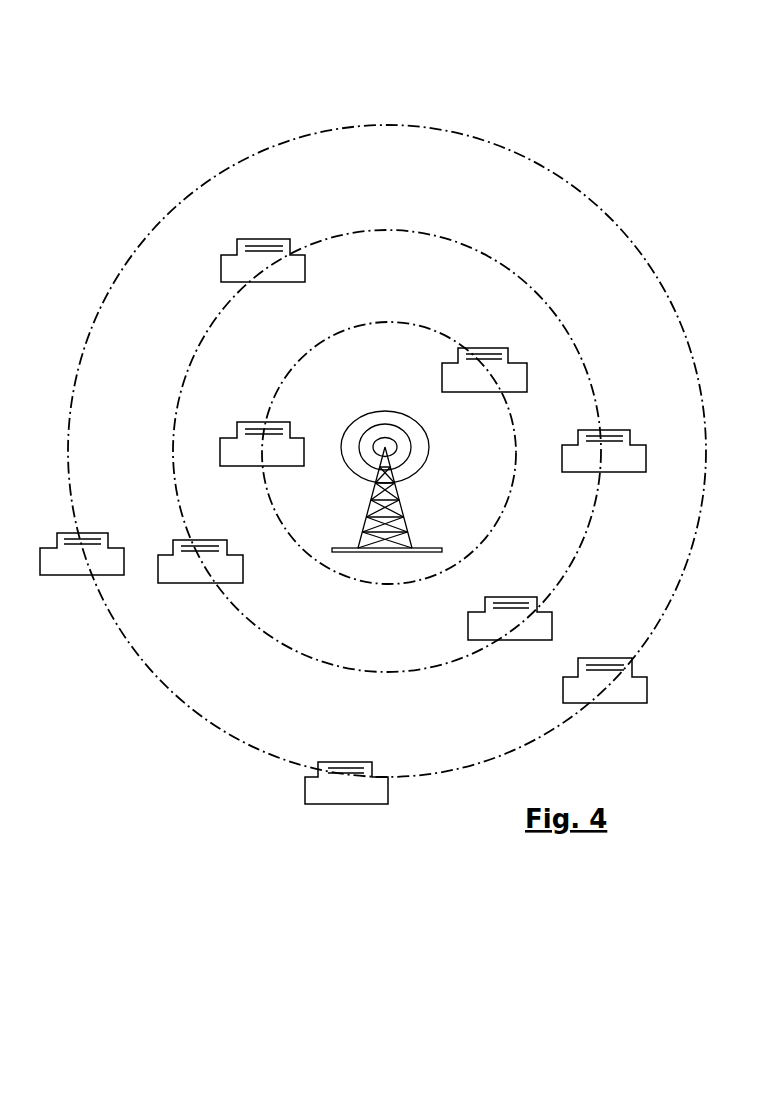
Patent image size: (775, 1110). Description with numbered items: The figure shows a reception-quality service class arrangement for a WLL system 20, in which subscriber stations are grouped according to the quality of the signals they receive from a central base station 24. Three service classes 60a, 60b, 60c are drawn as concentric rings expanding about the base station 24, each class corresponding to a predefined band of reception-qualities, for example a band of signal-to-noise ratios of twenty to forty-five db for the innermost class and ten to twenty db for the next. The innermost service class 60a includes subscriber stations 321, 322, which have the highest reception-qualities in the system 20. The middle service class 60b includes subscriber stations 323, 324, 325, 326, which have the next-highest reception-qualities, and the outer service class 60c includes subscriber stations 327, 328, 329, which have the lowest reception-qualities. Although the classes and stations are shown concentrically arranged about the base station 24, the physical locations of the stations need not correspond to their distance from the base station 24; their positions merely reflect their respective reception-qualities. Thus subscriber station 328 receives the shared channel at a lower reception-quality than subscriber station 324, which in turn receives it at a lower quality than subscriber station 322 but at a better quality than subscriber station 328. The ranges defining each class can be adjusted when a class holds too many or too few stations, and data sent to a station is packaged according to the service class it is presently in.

The WLL system 20 is at (366, 80).
The base station 24 is at (383, 490).
The service class 60a is at (389, 442).
The service class 60b is at (387, 466).
The service class 60c is at (375, 451).
The subscriber station 321 is at (260, 471).
The subscriber station 322 is at (482, 394).
The subscriber station 323 is at (202, 586).
The subscriber station 324 is at (512, 643).
The subscriber station 325 is at (606, 465).
The subscriber station 326 is at (250, 274).
The subscriber station 327 is at (78, 580).
The subscriber station 328 is at (344, 797).
The subscriber station 329 is at (656, 693).